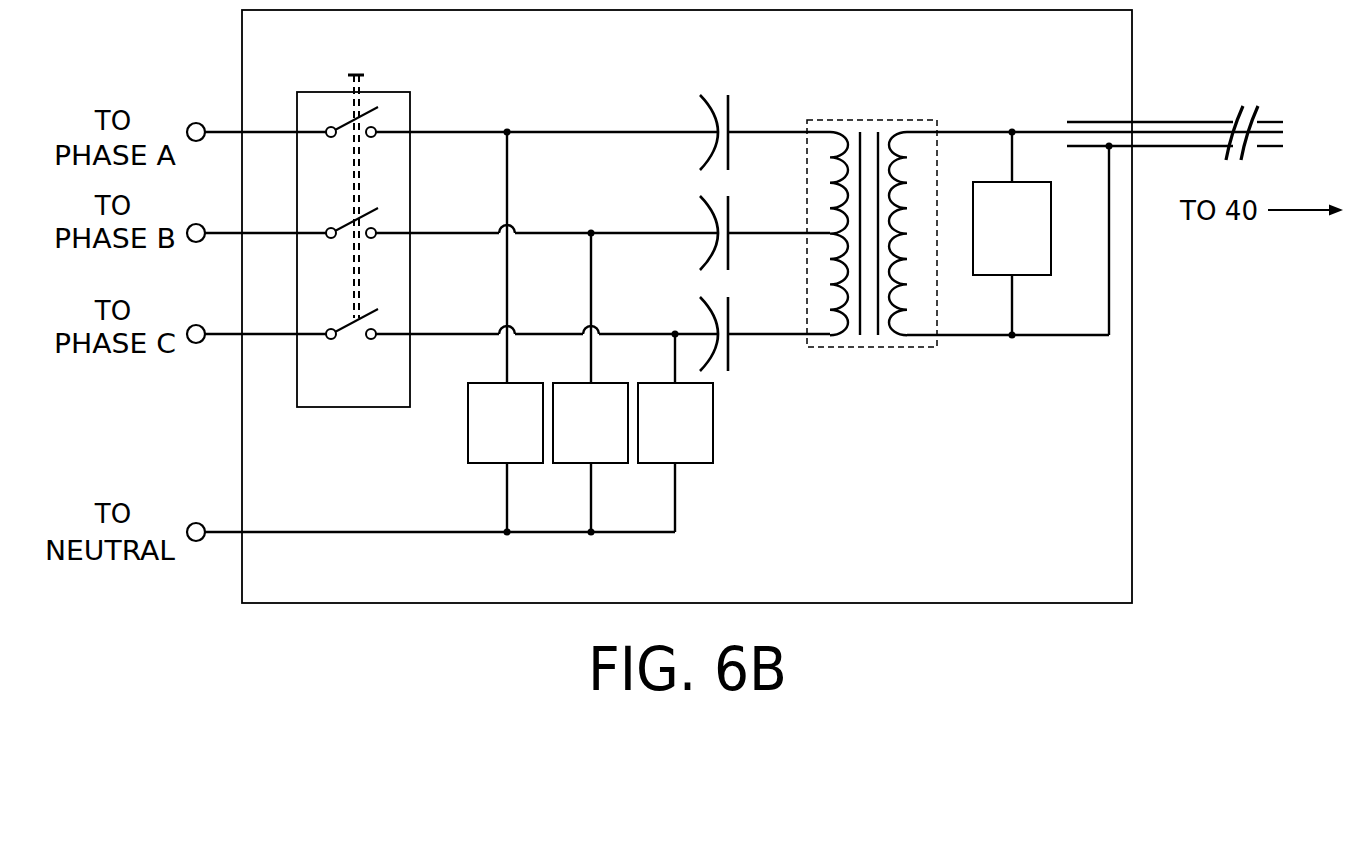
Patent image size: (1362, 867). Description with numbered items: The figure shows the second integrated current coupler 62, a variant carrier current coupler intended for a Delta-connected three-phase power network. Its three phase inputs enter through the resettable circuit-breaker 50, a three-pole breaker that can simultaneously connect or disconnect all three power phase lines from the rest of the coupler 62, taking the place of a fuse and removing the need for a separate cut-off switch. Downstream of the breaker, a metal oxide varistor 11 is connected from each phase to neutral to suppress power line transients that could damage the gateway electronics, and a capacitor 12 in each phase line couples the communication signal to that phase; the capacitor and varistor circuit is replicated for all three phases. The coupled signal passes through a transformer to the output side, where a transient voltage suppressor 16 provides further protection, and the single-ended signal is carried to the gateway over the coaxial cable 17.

The metal oxide varistor 11 is at (590, 423).
The capacitor 12 is at (700, 206).
The transient voltage suppressor 16 is at (999, 263).
The coaxial cable 17 is at (1205, 116).
The resettable circuit-breaker 50 is at (341, 388).
The second integrated current coupler 62 is at (1071, 574).